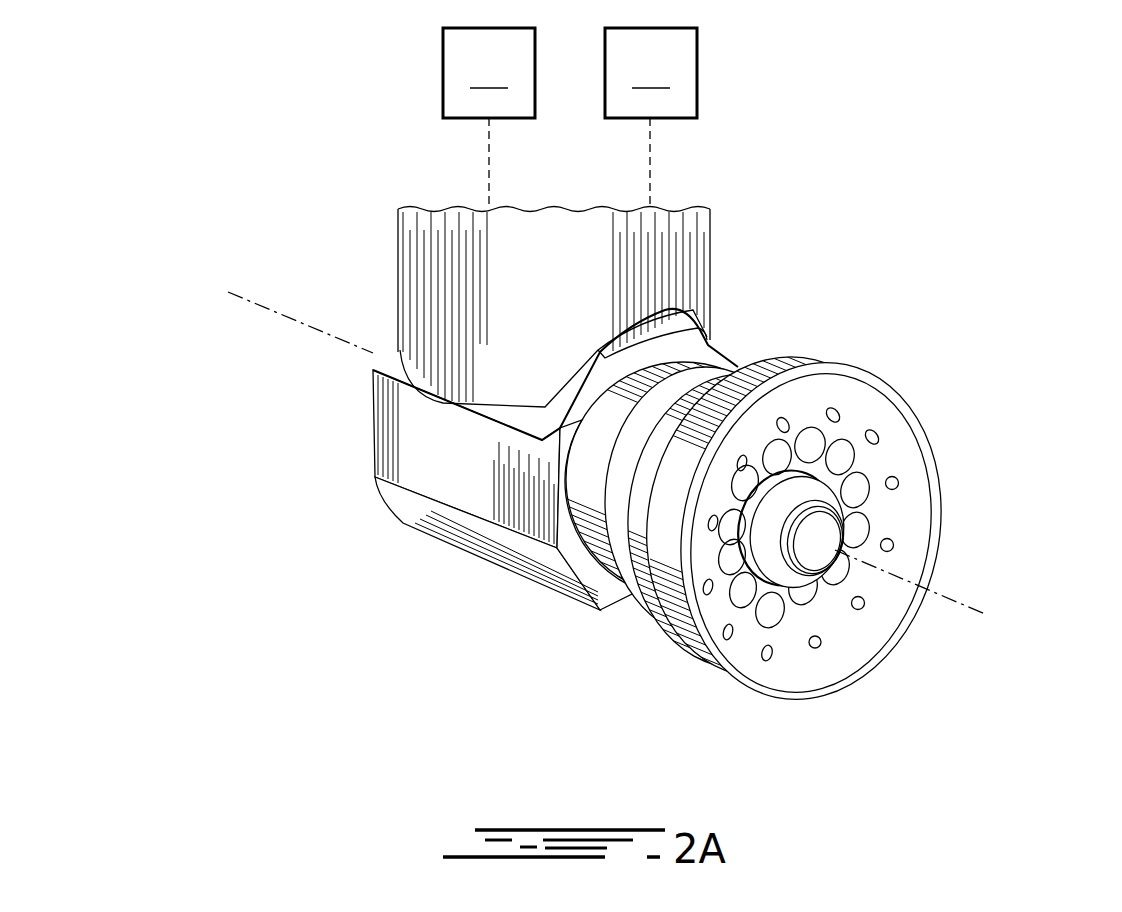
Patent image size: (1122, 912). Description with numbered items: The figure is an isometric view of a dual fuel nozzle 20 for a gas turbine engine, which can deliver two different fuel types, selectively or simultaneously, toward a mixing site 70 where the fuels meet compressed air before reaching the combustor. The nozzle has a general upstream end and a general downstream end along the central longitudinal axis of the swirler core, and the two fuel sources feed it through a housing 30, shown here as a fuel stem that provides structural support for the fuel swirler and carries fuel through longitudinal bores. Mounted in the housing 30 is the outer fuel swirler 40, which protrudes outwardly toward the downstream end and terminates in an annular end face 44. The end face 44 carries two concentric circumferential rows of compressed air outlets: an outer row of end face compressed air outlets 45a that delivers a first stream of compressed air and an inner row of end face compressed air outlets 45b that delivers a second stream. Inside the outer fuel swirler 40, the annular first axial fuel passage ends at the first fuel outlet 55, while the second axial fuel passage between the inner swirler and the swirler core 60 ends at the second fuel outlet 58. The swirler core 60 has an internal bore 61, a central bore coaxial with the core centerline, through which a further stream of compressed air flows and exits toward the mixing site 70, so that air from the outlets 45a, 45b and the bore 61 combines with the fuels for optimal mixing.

The fuel nozzle 20 is at (172, 163).
The housing 30 is at (418, 213).
The outer fuel swirler 40 is at (590, 524).
The end face 44 is at (892, 417).
The outer row of end face compressed air outlets 45a is at (894, 544).
The inner row of end face compressed air outlets 45b is at (803, 607).
The first fuel outlet 55 is at (800, 474).
The second fuel outlet 58 is at (835, 505).
The swirler core 60 is at (800, 576).
The internal bore 61 is at (803, 545).
The mixing site 70 is at (968, 638).